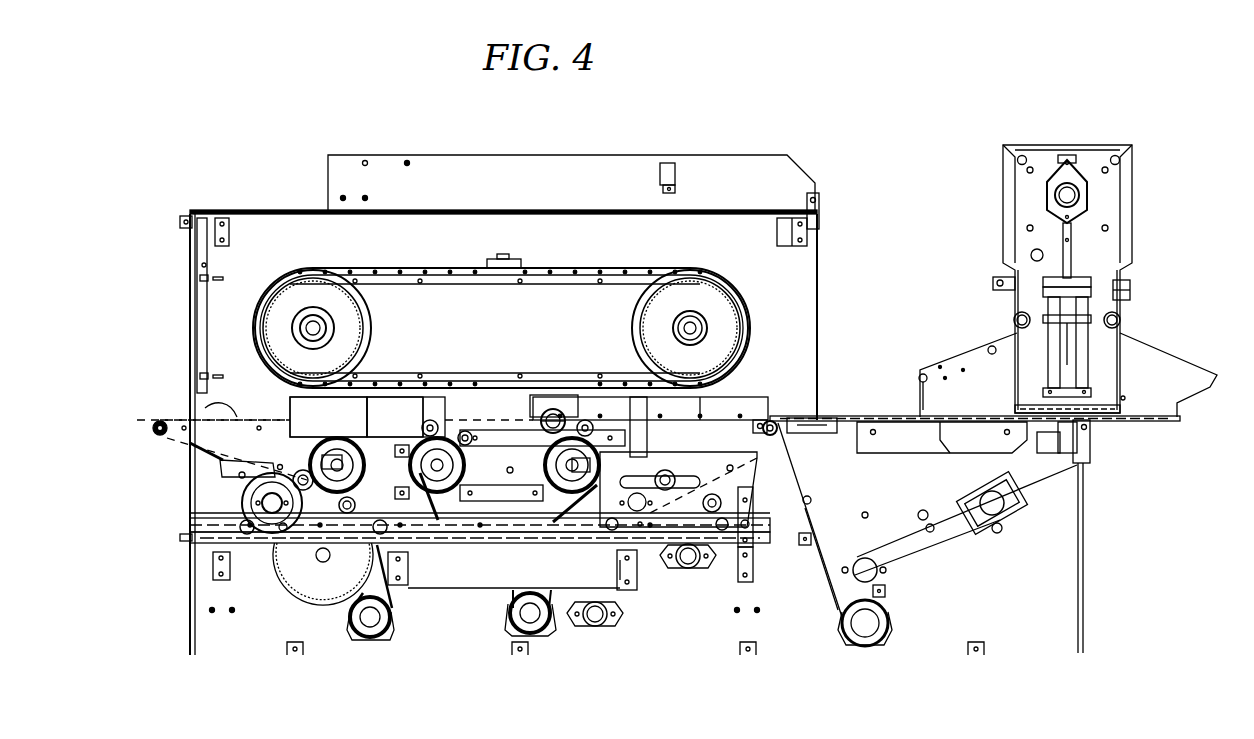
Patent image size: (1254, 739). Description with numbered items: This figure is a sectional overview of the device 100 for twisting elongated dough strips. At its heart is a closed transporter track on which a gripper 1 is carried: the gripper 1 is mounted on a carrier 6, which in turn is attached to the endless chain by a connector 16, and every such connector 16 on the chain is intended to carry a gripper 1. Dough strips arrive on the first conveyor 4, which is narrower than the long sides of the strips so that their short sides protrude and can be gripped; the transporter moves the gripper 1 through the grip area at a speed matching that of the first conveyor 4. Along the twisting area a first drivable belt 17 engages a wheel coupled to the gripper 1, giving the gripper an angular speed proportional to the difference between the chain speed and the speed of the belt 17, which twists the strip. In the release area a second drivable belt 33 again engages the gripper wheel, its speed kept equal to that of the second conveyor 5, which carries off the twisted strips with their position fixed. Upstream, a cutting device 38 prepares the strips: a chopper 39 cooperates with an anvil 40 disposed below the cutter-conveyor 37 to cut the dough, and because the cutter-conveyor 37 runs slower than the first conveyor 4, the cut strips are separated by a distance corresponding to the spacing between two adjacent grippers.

The gripper 1 is at (578, 404).
The first conveyor 4 is at (757, 428).
The second conveyor 5 is at (205, 408).
The carrier 6 is at (557, 396).
The connector 16 is at (512, 266).
The first drivable belt 17 is at (520, 440).
The second drivable belt 33 is at (393, 427).
The cutter-conveyor 37 is at (838, 420).
The cutting device 38 is at (1100, 150).
The chopper 39 is at (1082, 400).
The anvil 40 is at (1080, 425).
The device 100 is at (689, 643).